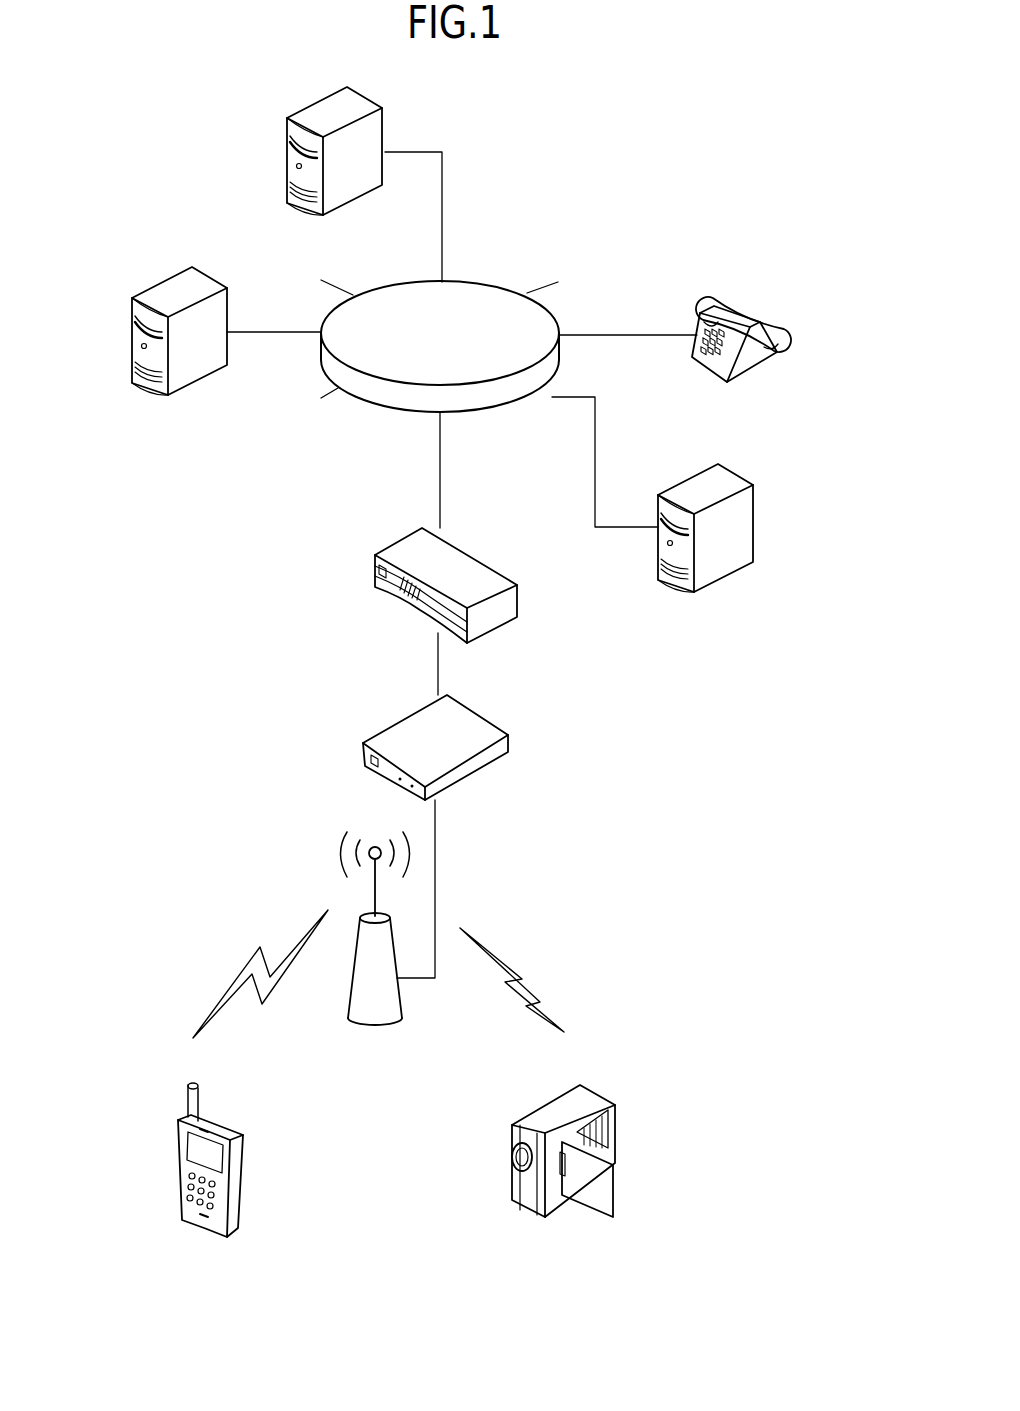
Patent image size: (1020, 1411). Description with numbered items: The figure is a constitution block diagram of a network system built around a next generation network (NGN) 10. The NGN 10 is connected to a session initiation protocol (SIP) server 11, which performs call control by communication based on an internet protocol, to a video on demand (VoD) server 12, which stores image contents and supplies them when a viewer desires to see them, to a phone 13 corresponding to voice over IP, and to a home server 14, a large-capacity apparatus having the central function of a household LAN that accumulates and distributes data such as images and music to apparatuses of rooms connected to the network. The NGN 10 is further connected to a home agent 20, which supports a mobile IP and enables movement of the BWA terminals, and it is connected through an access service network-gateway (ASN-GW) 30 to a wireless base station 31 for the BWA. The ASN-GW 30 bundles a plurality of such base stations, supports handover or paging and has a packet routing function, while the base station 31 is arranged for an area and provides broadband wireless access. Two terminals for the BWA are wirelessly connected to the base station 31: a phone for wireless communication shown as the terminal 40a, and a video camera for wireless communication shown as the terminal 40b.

The next generation network (NGN) 10 is at (472, 282).
The session initiation protocol (SIP) server 11 is at (170, 276).
The video on demand (VoD) server 12 is at (385, 121).
The phone for voice over IP 13 is at (770, 313).
The home server 14 is at (753, 522).
The home agent 20 is at (495, 563).
The access service network-gateway (ASN-GW) 30 is at (510, 742).
The wireless base station for the BWA 31 is at (405, 1005).
The terminal for the BWA 40a is at (232, 1122).
The terminal for the BWA 40b is at (607, 1095).